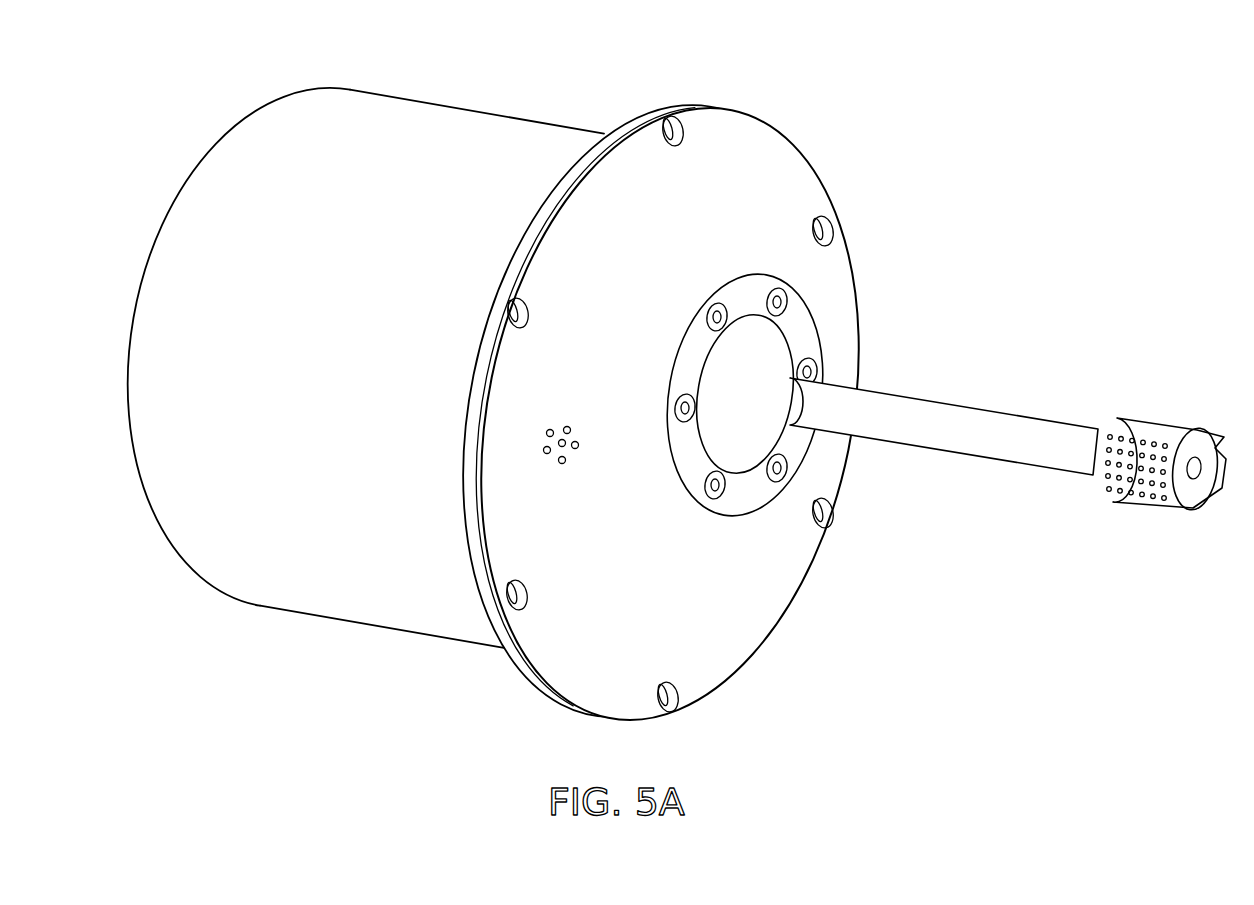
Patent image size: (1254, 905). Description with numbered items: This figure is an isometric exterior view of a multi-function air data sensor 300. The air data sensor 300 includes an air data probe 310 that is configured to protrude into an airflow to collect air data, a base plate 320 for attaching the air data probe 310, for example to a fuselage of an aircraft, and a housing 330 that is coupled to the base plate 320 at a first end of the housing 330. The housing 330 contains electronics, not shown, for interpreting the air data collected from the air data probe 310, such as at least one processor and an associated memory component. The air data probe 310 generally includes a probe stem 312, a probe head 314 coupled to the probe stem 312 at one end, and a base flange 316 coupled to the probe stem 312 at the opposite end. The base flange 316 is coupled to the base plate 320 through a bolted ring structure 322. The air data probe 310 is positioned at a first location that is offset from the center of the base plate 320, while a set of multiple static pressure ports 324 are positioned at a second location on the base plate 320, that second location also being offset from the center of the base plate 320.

The multi-function air data sensor 300 is at (657, 403).
The air data probe 310 is at (1008, 453).
The probe stem 312 is at (1006, 423).
The probe head 314 is at (1153, 433).
The base flange 316 is at (773, 343).
The base plate 320 is at (757, 610).
The bolted ring structure 322 is at (695, 478).
The static pressure ports 324 is at (588, 430).
The housing 330 is at (425, 125).